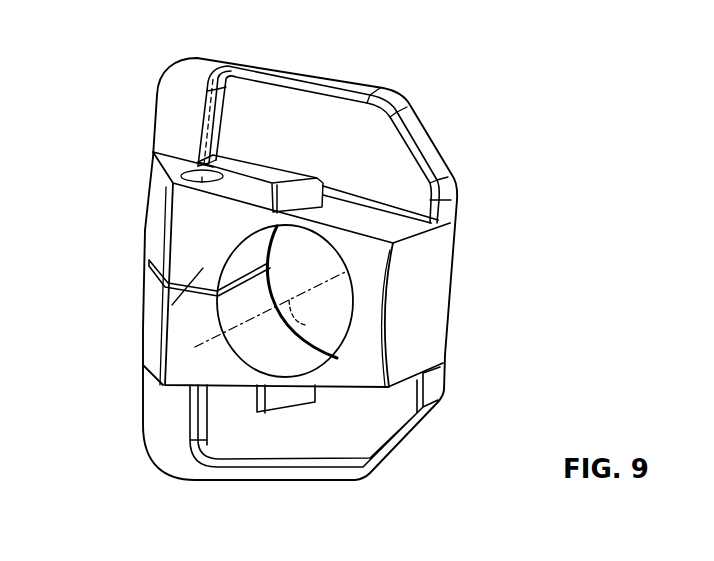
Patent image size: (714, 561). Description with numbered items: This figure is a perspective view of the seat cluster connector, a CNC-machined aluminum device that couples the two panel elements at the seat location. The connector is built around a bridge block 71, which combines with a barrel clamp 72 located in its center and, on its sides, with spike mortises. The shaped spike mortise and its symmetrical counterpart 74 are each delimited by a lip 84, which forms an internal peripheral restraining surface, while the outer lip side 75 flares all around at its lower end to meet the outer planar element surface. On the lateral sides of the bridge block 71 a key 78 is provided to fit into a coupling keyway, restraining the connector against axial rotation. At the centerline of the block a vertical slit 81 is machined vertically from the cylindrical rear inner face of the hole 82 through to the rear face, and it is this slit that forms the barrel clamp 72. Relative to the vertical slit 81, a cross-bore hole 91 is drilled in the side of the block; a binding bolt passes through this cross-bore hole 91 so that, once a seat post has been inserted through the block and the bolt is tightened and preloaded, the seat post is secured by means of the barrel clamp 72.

The bridge block 71 is at (417, 305).
The barrel clamp 72 is at (200, 343).
The symmetrical spike mortise 74 is at (243, 128).
The outer lip side 75 is at (213, 59).
The key 78 is at (248, 427).
The vertical slit 81 is at (148, 270).
The hole 82 is at (150, 270).
The lip 84 is at (313, 88).
The cross-bore hole 91 is at (200, 168).